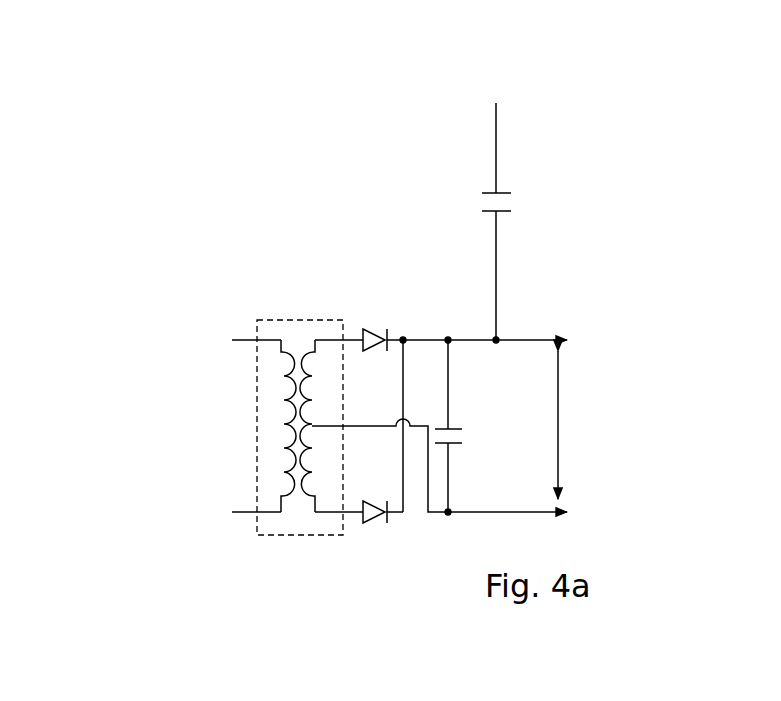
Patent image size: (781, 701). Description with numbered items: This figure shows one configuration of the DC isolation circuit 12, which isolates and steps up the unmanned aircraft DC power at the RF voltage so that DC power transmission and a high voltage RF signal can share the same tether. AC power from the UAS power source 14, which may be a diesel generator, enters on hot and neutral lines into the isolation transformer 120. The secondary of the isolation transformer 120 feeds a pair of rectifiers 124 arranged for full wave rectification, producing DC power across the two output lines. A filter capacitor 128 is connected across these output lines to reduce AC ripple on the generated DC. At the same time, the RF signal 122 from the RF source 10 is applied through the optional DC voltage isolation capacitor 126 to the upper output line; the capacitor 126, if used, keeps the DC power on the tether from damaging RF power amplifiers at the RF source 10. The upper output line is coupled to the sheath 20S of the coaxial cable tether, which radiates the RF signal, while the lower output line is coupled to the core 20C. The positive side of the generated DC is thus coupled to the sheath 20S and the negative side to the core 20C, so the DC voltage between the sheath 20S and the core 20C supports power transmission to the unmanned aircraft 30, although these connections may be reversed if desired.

The DC isolation circuit 12 is at (395, 196).
The RF source 10 is at (499, 113).
The RF signal 122 is at (492, 120).
The DC voltage isolation capacitor 126 is at (540, 257).
The UAS power source 14 is at (194, 427).
The isolation transformer 120 is at (298, 385).
The rectifier 124 is at (380, 473).
The filter capacitor 128 is at (472, 426).
The sheath 20S is at (549, 334).
The core 20C is at (575, 521).
The unmanned aircraft 30 is at (649, 425).